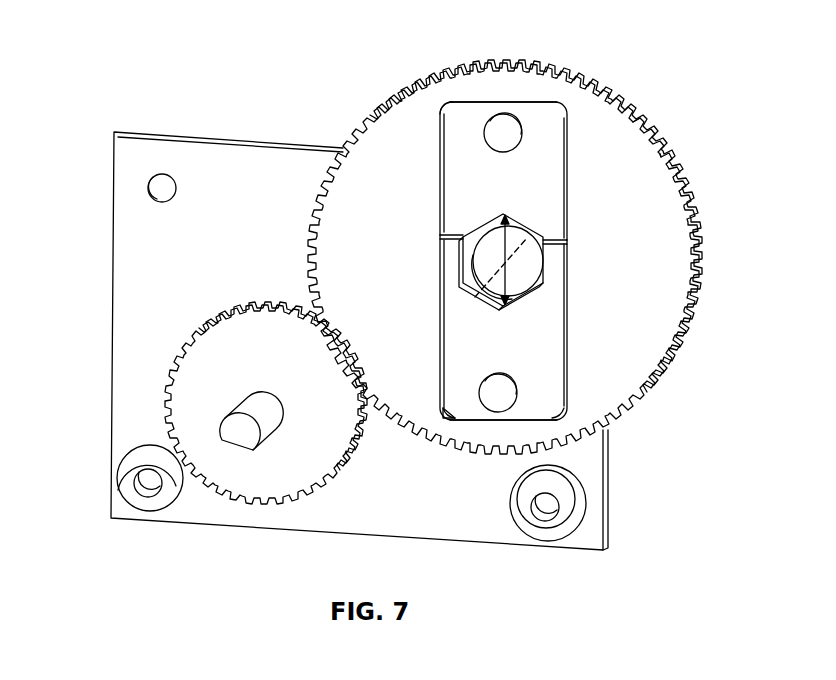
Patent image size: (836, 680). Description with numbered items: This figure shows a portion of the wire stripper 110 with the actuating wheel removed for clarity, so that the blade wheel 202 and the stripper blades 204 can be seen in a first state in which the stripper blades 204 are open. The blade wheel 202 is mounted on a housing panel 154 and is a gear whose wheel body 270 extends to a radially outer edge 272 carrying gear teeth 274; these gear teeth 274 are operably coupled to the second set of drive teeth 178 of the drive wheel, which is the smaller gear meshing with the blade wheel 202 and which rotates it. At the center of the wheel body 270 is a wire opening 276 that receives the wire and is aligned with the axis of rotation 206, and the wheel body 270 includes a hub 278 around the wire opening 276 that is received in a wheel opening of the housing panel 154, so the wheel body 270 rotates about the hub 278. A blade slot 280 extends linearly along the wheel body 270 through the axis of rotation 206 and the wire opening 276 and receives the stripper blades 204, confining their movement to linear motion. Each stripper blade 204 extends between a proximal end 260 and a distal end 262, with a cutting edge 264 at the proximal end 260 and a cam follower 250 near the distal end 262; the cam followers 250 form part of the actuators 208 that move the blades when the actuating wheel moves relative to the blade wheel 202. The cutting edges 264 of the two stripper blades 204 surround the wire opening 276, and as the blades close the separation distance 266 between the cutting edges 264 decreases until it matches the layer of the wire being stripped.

The wire stripper 110 is at (732, 114).
The housing panel 154 is at (215, 168).
The second set of drive teeth 178 is at (240, 308).
The blade wheel 202 is at (675, 297).
The stripper blade 204 is at (550, 125).
The axis of rotation 206 is at (517, 243).
The actuator 208 is at (514, 413).
The cam follower 250 is at (502, 138).
The proximal end 260 is at (560, 240).
The distal end 262 is at (478, 102).
The cutting edge 264 is at (523, 297).
The separation distance 266 is at (505, 243).
The wheel body 270 is at (587, 123).
The radially outer edge 272 is at (640, 128).
The gear teeth 274 is at (667, 157).
The wire opening 276 is at (525, 266).
The hub 278 is at (473, 260).
The blade slot 280 is at (449, 103).